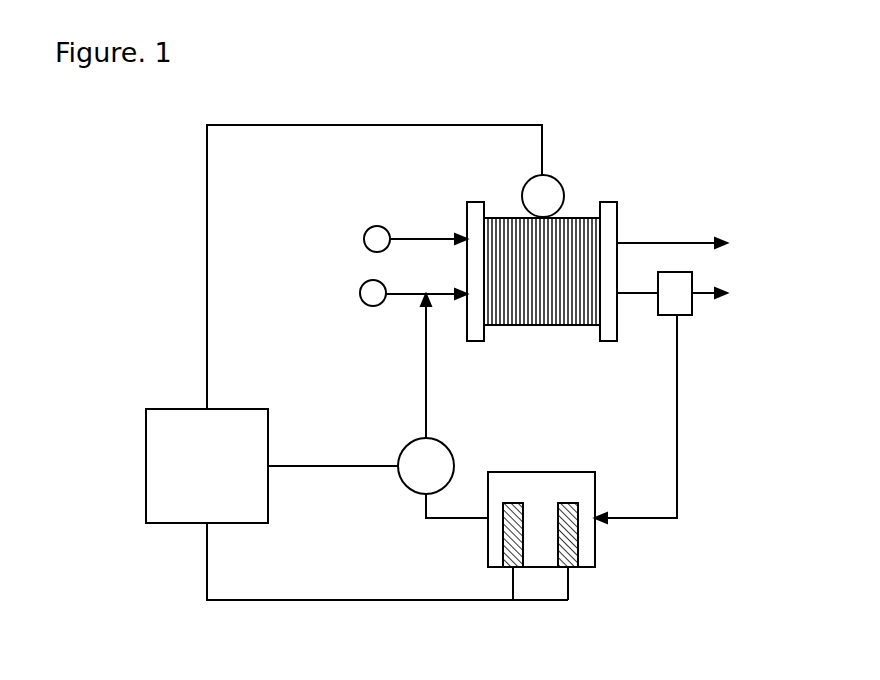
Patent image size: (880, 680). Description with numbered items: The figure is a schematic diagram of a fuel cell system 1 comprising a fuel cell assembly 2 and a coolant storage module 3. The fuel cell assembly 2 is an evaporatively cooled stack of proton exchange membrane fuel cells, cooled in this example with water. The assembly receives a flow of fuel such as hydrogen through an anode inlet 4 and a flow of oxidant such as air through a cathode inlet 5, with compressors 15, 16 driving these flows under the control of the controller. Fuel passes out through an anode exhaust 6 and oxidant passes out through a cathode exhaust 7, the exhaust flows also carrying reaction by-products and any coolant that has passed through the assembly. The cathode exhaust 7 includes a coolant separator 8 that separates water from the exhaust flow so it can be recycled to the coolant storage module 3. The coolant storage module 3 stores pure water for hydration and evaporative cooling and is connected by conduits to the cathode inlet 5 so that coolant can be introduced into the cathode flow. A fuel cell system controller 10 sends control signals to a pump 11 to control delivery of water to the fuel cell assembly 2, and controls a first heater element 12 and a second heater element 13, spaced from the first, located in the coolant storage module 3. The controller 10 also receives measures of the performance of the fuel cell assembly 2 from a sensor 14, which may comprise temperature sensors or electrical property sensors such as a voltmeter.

The fuel cell system 1 is at (264, 46).
The fuel cell assembly 2 is at (580, 205).
The coolant storage module 3 is at (595, 542).
The anode inlet 4 is at (397, 237).
The cathode inlet 5 is at (397, 296).
The anode exhaust 6 is at (662, 238).
The cathode exhaust 7 is at (642, 297).
The coolant separator 8 is at (675, 295).
The fuel cell system controller 10 is at (218, 476).
The pump 11 is at (427, 467).
The first heater element 12 is at (512, 542).
The second heater element 13 is at (558, 506).
The sensor 14 is at (542, 198).
The compressor 15 is at (372, 295).
The compressor 16 is at (373, 240).